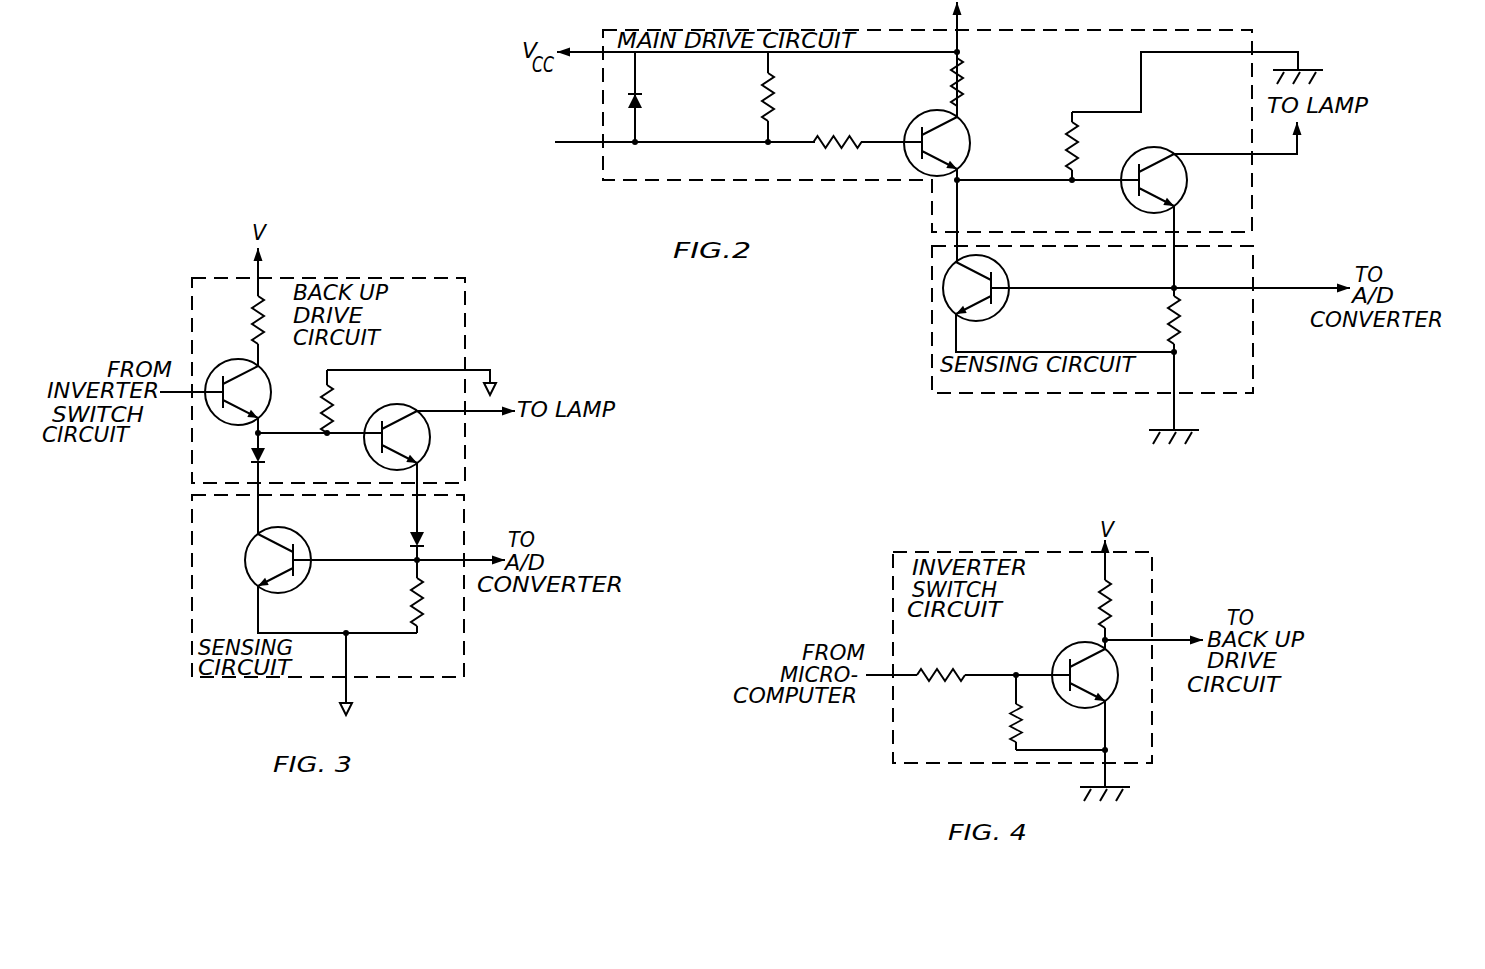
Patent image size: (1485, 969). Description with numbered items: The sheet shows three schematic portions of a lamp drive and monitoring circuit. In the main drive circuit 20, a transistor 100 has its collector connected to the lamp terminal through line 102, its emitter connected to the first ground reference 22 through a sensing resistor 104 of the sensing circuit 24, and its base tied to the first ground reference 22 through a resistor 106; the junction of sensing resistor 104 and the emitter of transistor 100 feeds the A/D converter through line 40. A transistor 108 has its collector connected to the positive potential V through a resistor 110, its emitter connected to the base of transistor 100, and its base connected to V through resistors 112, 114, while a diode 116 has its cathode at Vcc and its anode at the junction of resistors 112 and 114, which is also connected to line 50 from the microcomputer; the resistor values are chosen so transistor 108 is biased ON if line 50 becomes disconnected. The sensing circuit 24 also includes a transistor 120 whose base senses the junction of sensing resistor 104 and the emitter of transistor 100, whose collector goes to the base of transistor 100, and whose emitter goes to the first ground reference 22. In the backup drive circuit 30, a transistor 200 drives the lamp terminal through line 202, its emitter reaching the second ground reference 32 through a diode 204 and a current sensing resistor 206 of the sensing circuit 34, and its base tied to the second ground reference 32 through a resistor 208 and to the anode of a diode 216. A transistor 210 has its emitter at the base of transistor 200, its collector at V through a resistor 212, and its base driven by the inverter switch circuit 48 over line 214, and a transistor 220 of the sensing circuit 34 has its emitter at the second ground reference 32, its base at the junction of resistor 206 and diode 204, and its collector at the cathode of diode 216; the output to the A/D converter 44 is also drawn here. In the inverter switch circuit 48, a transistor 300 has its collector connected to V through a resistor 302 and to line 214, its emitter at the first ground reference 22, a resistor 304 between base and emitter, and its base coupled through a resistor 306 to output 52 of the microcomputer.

In FIG. 2, the main drive circuit 20 is at (1244, 30).
In FIG. 2, the first ground reference 22 is at (1306, 70).
In FIG. 4, the first ground reference 22 is at (1128, 785).
In FIG. 2, the sensing circuit 24 is at (1253, 376).
In FIG. 2, the line 40 is at (1312, 290).
In FIG. 2, the line 50 is at (572, 142).
In FIG. 2, the transistor 100 is at (1160, 151).
In FIG. 2, the line 102 is at (1265, 158).
In FIG. 2, the sensing resistor 104 is at (1203, 331).
In FIG. 2, the resistor 106 is at (1076, 140).
In FIG. 2, the transistor 108 is at (960, 119).
In FIG. 2, the resistor 110 is at (962, 84).
In FIG. 2, the resistor 112 is at (862, 138).
In FIG. 2, the resistor 114 is at (776, 97).
In FIG. 2, the diode 116 is at (642, 102).
In FIG. 2, the transistor 120 is at (992, 321).
In FIG. 3, the backup drive circuit 30 is at (470, 281).
In FIG. 3, the second ground reference 32 is at (494, 382).
In FIG. 3, the sensing circuit 34 is at (467, 656).
In FIG. 3, the output line to A/D converter 44 is at (480, 564).
In FIG. 3, the transistor 200 is at (390, 404).
In FIG. 3, the line 202 is at (481, 416).
In FIG. 3, the diode 204 is at (428, 534).
In FIG. 3, the current sensing resistor 206 is at (412, 594).
In FIG. 3, the resistor 208 is at (350, 401).
In FIG. 3, the transistor 210 is at (256, 370).
In FIG. 3, the resistor 212 is at (256, 318).
In FIG. 3, the line 214 is at (175, 393).
In FIG. 4, the line 214 is at (1166, 640).
In FIG. 3, the diode 216 is at (267, 456).
In FIG. 3, the transistor 220 is at (300, 537).
In FIG. 4, the inverter switch circuit 48 is at (1150, 550).
In FIG. 4, the output 52 is at (882, 678).
In FIG. 4, the transistor 300 is at (1115, 700).
In FIG. 4, the resistor 302 is at (1098, 606).
In FIG. 4, the resistor 304 is at (1012, 699).
In FIG. 4, the resistor 306 is at (921, 665).